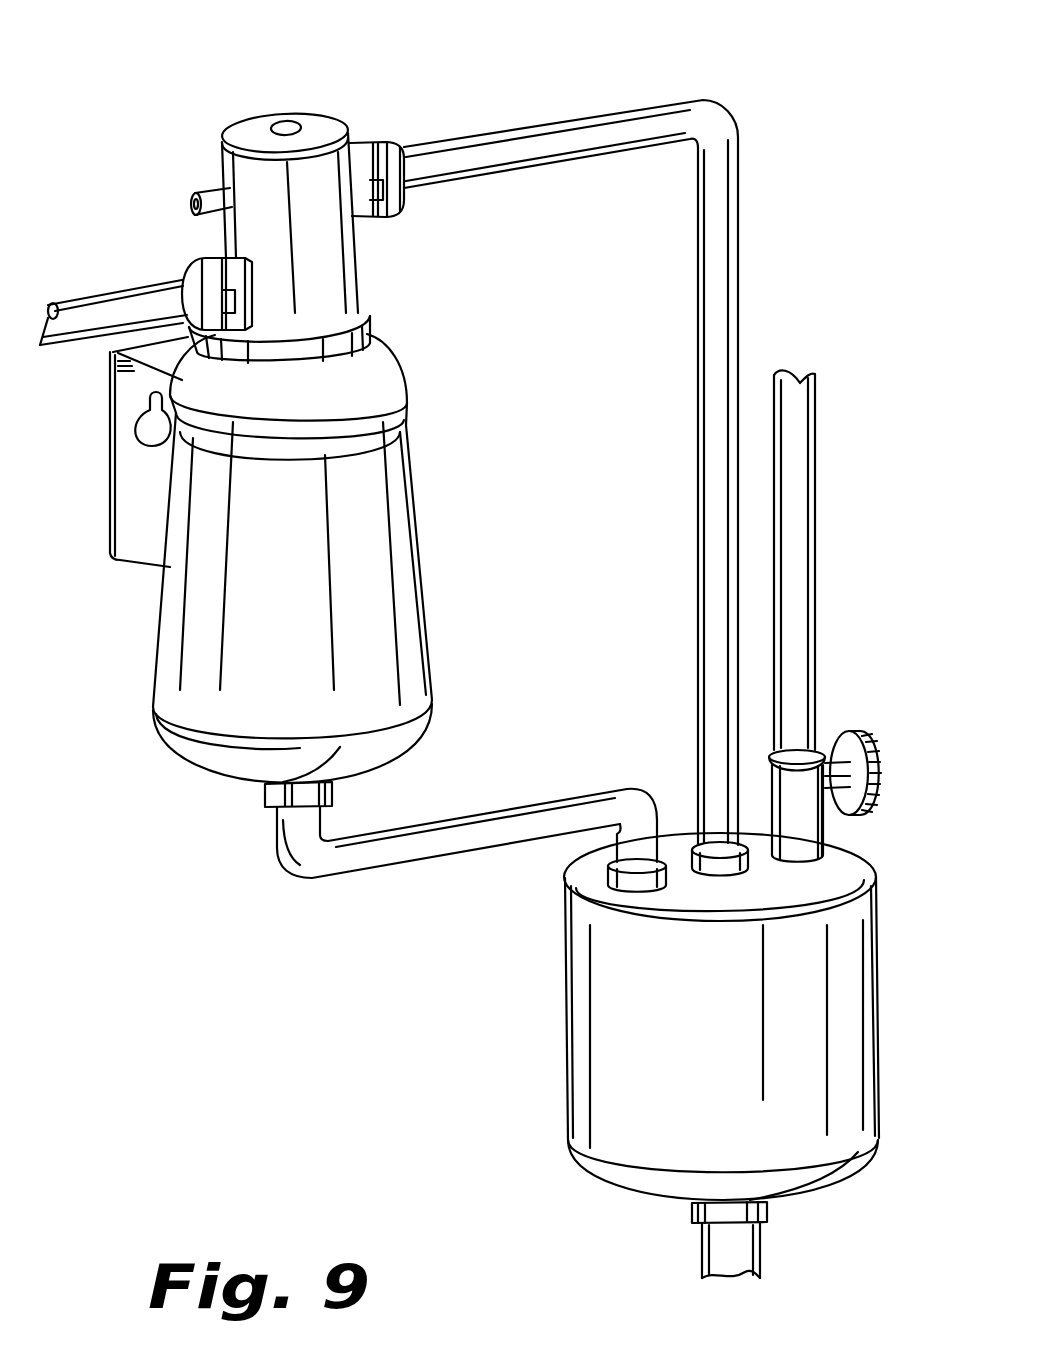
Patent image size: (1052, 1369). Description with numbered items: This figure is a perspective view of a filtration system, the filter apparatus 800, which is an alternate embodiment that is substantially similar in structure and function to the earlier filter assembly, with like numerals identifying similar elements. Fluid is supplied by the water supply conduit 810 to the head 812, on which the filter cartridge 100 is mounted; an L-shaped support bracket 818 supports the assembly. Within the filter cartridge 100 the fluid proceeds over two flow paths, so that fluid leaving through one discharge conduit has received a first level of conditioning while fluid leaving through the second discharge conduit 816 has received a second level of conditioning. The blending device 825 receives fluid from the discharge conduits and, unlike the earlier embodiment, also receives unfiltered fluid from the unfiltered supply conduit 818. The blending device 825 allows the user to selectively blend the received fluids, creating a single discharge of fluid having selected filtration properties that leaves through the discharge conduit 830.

The filter apparatus 800 is at (140, 128).
The water supply conduit 810 is at (100, 313).
The head 812 is at (343, 125).
The second discharge conduit 816 is at (560, 145).
The unfiltered supply conduit 818 is at (130, 545).
The filter cartridge 100 is at (437, 500).
The blending device 825 is at (542, 1020).
The discharge conduit 830 is at (707, 1252).